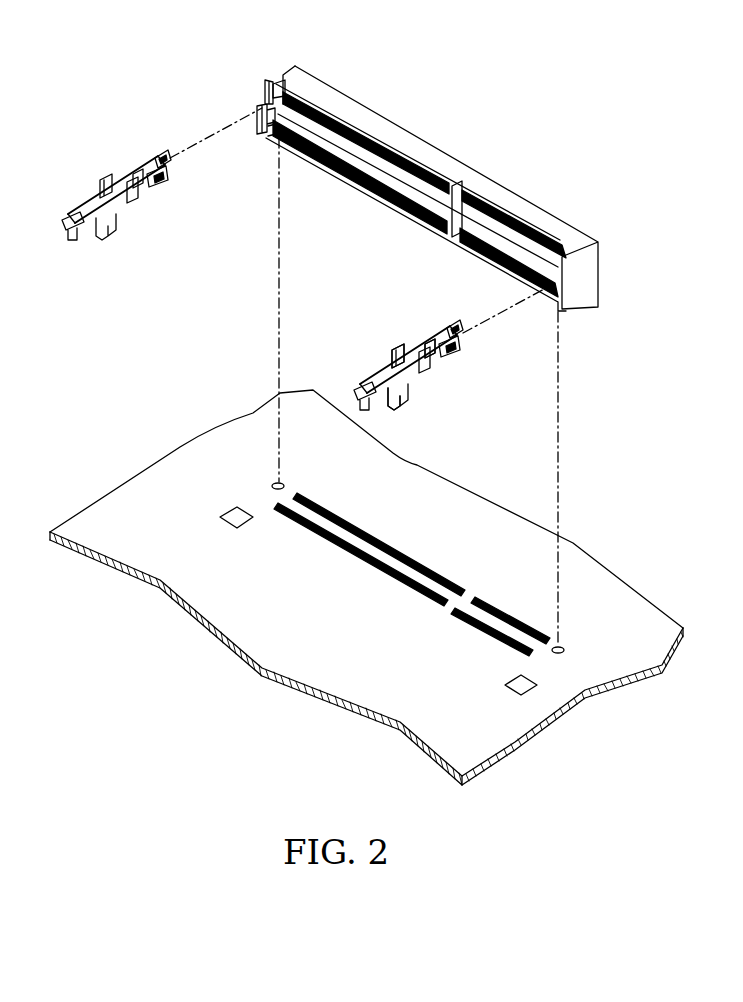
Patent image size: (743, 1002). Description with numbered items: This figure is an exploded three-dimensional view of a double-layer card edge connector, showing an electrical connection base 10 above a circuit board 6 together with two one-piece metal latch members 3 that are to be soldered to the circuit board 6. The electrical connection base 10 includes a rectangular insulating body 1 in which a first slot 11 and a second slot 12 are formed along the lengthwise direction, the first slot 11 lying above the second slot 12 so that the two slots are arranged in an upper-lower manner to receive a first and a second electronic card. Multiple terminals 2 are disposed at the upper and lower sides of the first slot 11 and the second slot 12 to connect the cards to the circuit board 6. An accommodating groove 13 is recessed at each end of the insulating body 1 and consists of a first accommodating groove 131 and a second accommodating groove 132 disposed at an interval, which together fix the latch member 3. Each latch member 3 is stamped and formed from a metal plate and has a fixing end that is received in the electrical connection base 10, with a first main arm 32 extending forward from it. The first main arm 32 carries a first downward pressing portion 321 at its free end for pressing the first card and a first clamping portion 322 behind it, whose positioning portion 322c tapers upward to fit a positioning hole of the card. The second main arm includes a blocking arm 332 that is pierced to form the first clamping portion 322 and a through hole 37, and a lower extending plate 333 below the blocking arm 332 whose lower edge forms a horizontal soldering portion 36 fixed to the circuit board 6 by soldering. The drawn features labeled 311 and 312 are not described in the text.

The insulating body 1 is at (385, 117).
The electrical connection base 10 is at (407, 157).
The first slot 11 is at (284, 95).
The second slot 12 is at (268, 130).
The accommodating groove 13 is at (256, 69).
The first accommodating groove 131 is at (265, 88).
The second accommodating groove 132 is at (276, 82).
The terminals 2 is at (398, 203).
The latch member 3 is at (284, 278).
The mounting hole 311 is at (164, 157).
The mounting hole 312 is at (170, 178).
The first main arm 32 is at (400, 342).
The first downward pressing portion 321 is at (110, 178).
The first clamping portion 322 is at (137, 177).
The positioning portion 322c is at (410, 336).
The blocking arm 332 is at (92, 207).
The lower extending plate 333 is at (418, 381).
The soldering portion 36 is at (103, 238).
The through hole 37 is at (140, 192).
The circuit board 6 is at (603, 560).